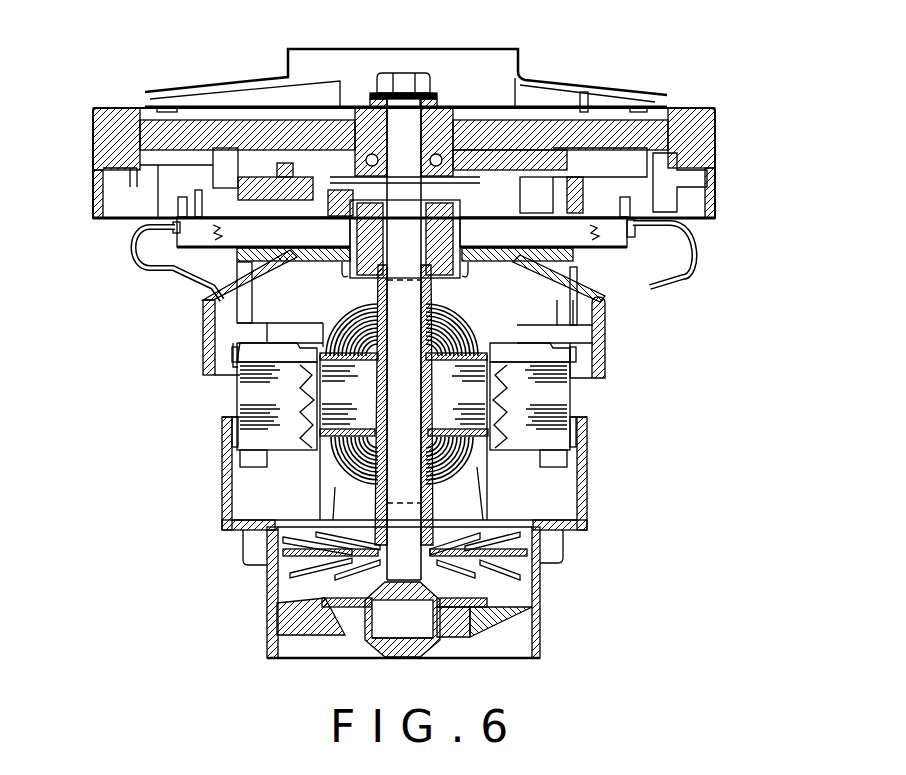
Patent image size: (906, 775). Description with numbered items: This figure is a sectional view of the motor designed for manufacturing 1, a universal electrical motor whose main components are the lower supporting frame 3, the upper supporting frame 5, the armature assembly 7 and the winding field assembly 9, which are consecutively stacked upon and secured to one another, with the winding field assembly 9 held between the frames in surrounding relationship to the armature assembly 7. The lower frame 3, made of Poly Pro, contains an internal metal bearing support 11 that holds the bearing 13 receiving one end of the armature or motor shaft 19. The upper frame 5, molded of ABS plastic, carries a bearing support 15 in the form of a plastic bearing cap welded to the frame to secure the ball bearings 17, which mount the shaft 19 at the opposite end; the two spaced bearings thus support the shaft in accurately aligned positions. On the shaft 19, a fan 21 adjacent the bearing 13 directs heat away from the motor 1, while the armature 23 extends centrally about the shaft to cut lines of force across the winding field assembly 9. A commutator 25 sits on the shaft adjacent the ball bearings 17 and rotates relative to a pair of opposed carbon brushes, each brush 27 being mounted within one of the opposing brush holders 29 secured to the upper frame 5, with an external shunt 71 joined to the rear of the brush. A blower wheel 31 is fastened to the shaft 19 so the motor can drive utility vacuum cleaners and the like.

The motor designed for manufacturing 1 is at (680, 362).
The lower supporting frame 3 is at (266, 590).
The upper supporting frame 5 is at (195, 333).
The armature assembly 7 is at (370, 498).
The winding field assembly 9 is at (268, 392).
The internal metal bearing support 11 is at (320, 620).
The bearing 13 is at (425, 625).
The bearing support 15 is at (537, 135).
The ball bearings 17 is at (453, 118).
The armature or motor shaft 19 is at (403, 130).
The fan 21 is at (517, 557).
The armature 23 is at (483, 463).
The commutator 25 is at (492, 263).
The brush 27 is at (247, 233).
The brush holders 29 is at (282, 223).
The blower wheel 31 is at (583, 94).
The external shunt 71 is at (130, 257).